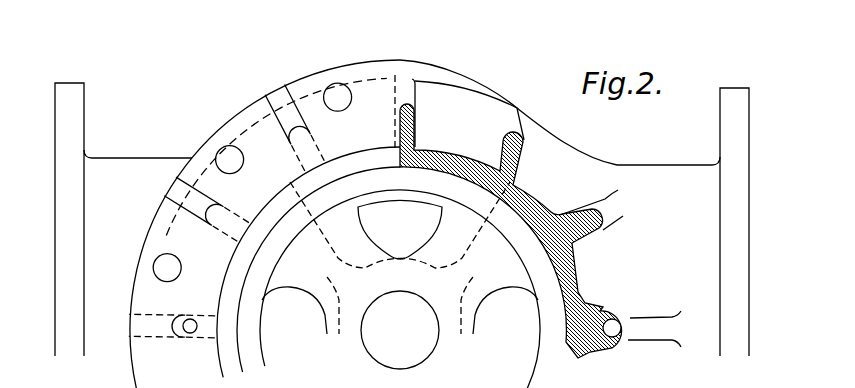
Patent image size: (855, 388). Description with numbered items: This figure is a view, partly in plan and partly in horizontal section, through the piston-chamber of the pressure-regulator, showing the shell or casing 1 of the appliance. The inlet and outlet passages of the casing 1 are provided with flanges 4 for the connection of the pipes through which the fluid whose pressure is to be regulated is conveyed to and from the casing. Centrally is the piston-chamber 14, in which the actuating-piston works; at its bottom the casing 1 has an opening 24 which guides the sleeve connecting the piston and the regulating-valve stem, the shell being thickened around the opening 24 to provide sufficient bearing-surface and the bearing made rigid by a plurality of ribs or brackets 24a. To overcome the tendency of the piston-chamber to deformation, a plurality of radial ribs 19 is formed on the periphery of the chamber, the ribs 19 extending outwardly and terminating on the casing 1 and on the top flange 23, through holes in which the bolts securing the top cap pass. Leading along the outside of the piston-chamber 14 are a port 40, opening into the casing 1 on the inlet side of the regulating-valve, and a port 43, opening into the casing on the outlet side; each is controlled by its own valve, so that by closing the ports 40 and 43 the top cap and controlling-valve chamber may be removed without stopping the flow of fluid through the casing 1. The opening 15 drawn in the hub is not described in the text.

The casing or shell 1 is at (402, 224).
The flanges 4 is at (403, 202).
The piston-chamber 14 is at (263, 341).
The opening 15 is at (400, 230).
The radial ribs 19 is at (507, 142).
The top flange 23 is at (240, 210).
The opening 24 is at (400, 328).
The ribs or brackets 24a is at (400, 258).
The port 40 is at (616, 320).
The port 43 is at (187, 320).